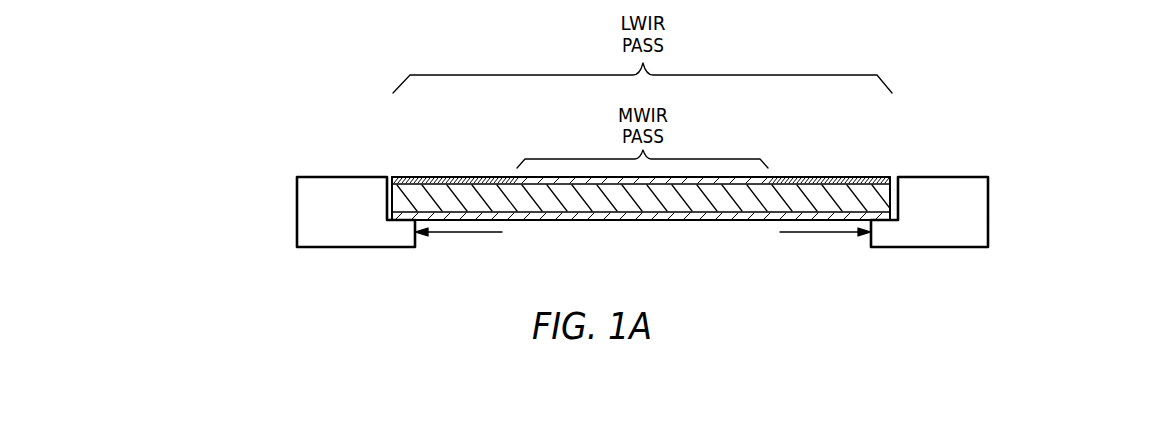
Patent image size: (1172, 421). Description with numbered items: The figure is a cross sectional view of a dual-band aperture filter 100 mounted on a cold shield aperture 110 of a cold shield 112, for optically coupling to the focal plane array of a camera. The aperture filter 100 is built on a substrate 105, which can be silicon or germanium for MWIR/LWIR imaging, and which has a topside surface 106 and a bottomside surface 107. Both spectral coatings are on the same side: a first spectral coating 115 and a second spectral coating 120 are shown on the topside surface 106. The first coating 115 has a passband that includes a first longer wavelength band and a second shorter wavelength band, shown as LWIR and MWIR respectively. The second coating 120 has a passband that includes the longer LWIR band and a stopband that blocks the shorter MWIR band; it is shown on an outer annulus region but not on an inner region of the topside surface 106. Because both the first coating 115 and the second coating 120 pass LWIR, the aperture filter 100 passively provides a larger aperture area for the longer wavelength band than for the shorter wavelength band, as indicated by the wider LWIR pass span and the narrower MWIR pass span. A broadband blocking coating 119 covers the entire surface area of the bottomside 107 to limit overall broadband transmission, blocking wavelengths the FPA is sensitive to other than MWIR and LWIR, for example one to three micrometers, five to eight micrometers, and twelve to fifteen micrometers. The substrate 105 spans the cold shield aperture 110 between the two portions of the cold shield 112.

The dual-band aperture filter 100 is at (561, 164).
The substrate 105 is at (833, 190).
The topside surface 106 is at (390, 177).
The bottomside surface 107 is at (390, 220).
The cold shield aperture 110 is at (643, 234).
The cold shield 112 is at (888, 238).
The first spectral coating 115 is at (692, 177).
The broadband blocking coating 119 is at (832, 218).
The second spectral coating 120 is at (500, 177).